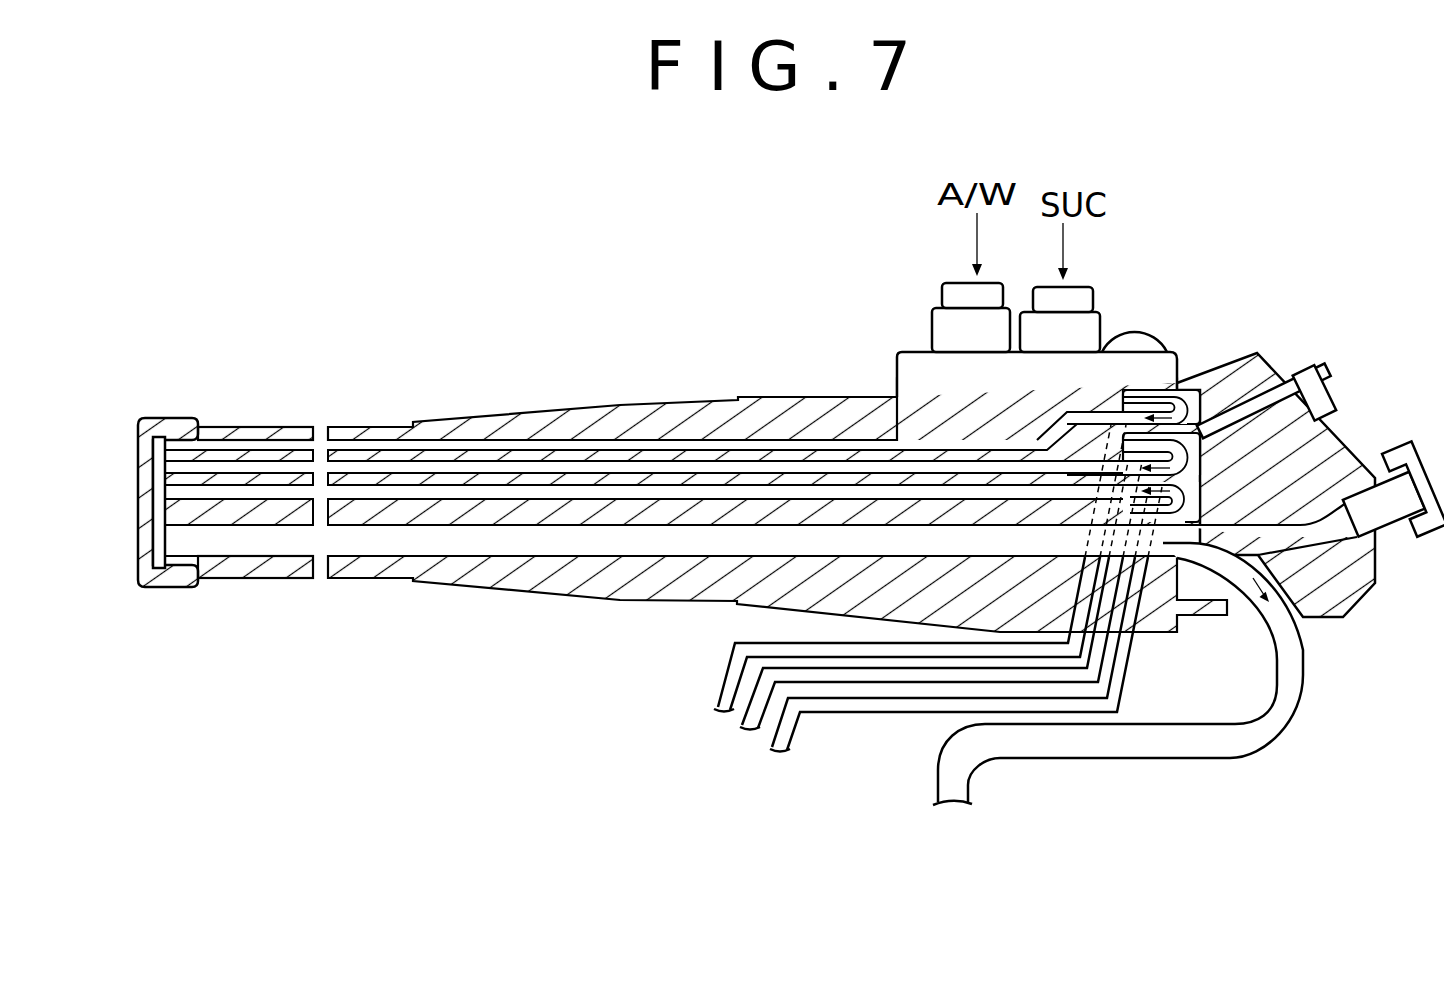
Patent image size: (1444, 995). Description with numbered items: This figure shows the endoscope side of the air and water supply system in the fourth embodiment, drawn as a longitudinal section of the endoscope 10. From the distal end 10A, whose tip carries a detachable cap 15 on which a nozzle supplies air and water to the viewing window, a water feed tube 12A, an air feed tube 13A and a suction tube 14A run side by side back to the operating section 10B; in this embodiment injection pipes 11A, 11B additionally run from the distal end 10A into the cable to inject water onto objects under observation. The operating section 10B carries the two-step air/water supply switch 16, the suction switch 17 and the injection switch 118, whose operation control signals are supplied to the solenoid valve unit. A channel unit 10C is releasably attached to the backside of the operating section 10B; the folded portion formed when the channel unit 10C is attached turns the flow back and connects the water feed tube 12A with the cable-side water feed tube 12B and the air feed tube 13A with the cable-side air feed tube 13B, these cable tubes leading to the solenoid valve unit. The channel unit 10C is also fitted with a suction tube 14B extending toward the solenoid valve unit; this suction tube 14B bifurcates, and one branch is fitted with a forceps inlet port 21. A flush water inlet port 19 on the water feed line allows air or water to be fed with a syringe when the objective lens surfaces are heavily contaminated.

The endoscope 10 is at (743, 358).
The distal end 10A is at (245, 427).
The operating section 10B is at (1180, 355).
The channel unit 10C is at (1255, 362).
The injection pipe 11A is at (397, 443).
The injection pipe 11B is at (718, 701).
The water feed tube 12A is at (540, 470).
The water feed tube 12B is at (742, 735).
The air feed tube 13A is at (375, 490).
The air feed tube 13B is at (778, 750).
The suction tube 14A is at (477, 543).
The suction tube 14B is at (1125, 750).
The detachable cap 15 is at (152, 422).
The air/water supply switch 16 is at (950, 297).
The suction switch 17 is at (1085, 302).
The injection switch 118 is at (1140, 335).
The flush water inlet port 19 is at (1325, 380).
The forceps inlet port 21 is at (1387, 512).